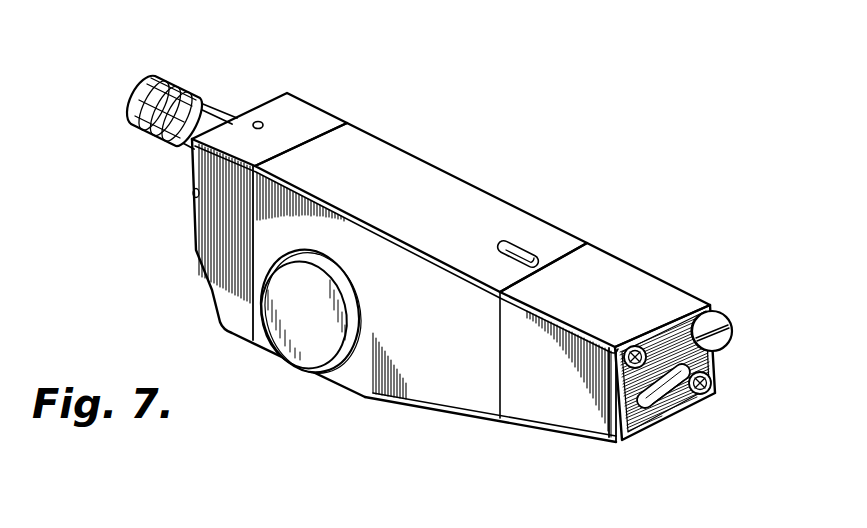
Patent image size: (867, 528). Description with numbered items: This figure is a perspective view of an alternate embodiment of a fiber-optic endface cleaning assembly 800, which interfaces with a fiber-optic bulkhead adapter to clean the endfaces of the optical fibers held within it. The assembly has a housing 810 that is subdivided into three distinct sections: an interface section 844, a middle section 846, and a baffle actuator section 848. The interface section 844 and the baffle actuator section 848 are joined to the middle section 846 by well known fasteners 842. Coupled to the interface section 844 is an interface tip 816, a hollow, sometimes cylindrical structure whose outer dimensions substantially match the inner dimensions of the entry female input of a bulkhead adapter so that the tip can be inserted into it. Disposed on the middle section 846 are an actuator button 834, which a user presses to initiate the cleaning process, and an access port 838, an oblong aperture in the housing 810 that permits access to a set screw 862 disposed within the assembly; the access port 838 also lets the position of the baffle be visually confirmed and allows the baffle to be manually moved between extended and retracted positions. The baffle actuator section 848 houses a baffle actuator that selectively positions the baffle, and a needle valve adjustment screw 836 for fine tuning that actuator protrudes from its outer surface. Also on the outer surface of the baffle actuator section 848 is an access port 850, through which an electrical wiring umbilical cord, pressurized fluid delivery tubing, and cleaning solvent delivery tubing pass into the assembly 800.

The fiber-optic endface cleaning assembly 800 is at (650, 73).
The housing 810 is at (422, 390).
The interface tip 816 is at (140, 142).
The actuator button 834 is at (317, 358).
The needle valve adjustment screw 836 is at (718, 316).
The access port 838 is at (531, 256).
The fasteners 842 is at (665, 353).
The interface section 844 is at (318, 122).
The middle section 846 is at (415, 168).
The baffle actuator section 848 is at (635, 292).
The access port 850 is at (675, 397).
The set screw 862 is at (518, 251).